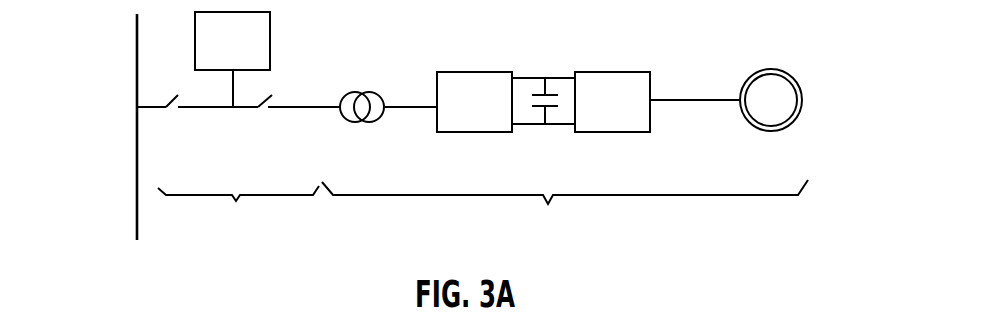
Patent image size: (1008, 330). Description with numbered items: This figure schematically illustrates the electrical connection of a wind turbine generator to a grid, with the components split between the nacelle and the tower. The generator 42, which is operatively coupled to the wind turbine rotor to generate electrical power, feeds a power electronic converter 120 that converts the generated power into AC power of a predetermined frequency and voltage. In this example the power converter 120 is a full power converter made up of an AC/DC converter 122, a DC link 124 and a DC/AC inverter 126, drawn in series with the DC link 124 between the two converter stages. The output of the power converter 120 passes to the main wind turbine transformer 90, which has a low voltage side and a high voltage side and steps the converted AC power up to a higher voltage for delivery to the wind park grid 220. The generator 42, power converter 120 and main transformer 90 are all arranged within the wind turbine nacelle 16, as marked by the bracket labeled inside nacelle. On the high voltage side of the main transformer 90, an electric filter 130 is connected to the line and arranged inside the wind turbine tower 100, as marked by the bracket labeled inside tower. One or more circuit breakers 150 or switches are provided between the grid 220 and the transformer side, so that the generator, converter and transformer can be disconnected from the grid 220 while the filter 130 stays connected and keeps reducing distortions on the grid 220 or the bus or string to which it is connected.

The wind park grid 220 is at (137, 152).
The electric filter 130 is at (270, 48).
The circuit breaker 150 is at (268, 96).
The main wind turbine transformer 90 is at (357, 80).
The DC/AC inverter 126 is at (475, 72).
The power electronic converter 120 is at (562, 88).
The DC link 124 is at (547, 113).
The AC/DC converter 122 is at (620, 72).
The generator 42 is at (802, 100).
The wind turbine tower 100 is at (270, 197).
The wind turbine nacelle 16 is at (603, 197).